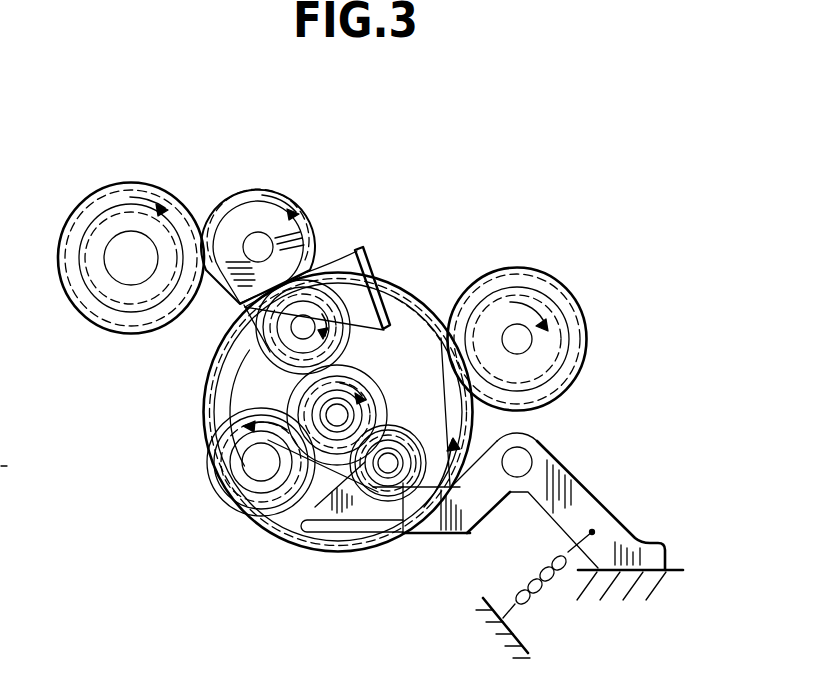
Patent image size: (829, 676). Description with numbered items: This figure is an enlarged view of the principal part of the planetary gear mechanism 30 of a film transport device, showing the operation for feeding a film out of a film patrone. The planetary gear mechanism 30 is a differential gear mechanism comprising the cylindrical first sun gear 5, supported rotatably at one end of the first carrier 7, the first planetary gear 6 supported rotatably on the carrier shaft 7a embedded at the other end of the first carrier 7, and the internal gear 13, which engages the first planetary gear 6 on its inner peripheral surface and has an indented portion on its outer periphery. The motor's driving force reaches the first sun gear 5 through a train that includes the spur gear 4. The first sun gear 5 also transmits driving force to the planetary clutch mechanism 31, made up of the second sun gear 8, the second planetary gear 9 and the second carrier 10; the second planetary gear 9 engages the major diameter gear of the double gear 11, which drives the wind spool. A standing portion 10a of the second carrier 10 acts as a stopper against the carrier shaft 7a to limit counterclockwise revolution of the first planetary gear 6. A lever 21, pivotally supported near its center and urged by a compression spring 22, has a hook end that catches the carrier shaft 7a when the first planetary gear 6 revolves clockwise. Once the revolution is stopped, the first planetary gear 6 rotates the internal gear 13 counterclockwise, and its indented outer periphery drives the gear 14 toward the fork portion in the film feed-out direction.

The spur gear 4 is at (262, 510).
The first sun gear 5 is at (332, 443).
The first planetary gear 6 is at (383, 499).
The first carrier 7 is at (350, 478).
The carrier shaft 7a is at (403, 533).
The second sun gear 8 is at (247, 305).
The second planetary gear 9 is at (241, 203).
The second carrier 10 is at (346, 266).
The standing portion 10a is at (364, 258).
The double gear 11 is at (135, 200).
The internal gear 13 is at (395, 308).
The gear 14 is at (533, 285).
The lever 21 is at (583, 510).
The compression spring 22 is at (550, 600).
The planetary gear mechanism 30 is at (192, 407).
The planetary clutch mechanism 31 is at (283, 187).